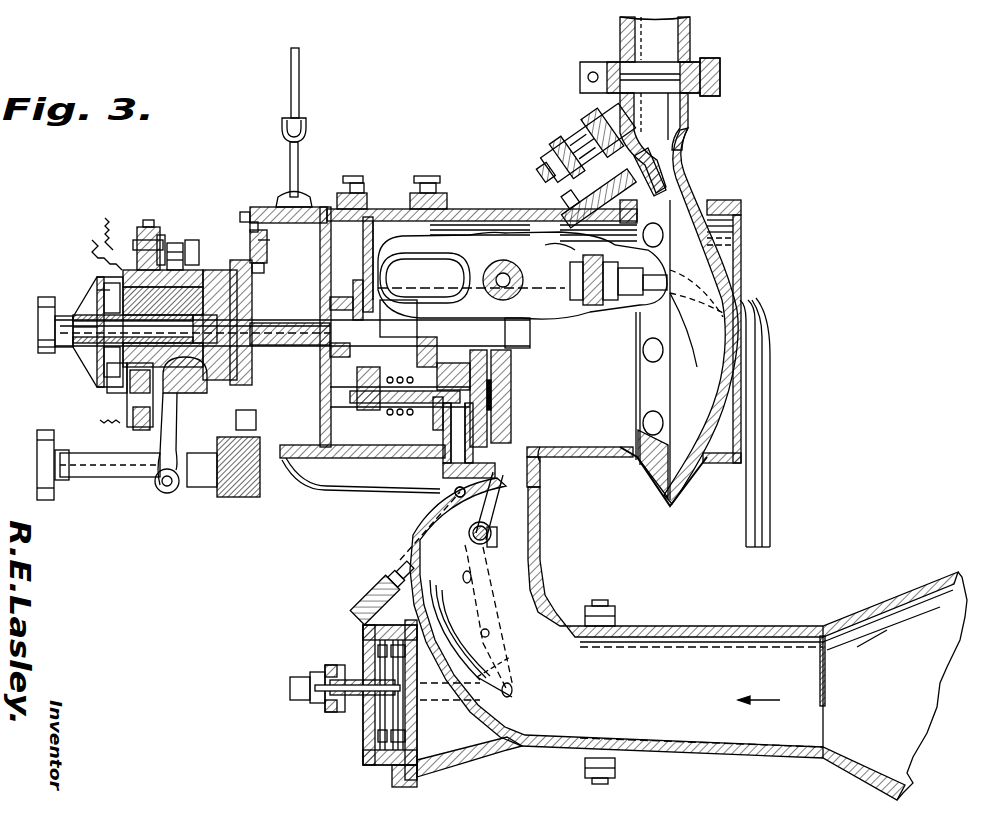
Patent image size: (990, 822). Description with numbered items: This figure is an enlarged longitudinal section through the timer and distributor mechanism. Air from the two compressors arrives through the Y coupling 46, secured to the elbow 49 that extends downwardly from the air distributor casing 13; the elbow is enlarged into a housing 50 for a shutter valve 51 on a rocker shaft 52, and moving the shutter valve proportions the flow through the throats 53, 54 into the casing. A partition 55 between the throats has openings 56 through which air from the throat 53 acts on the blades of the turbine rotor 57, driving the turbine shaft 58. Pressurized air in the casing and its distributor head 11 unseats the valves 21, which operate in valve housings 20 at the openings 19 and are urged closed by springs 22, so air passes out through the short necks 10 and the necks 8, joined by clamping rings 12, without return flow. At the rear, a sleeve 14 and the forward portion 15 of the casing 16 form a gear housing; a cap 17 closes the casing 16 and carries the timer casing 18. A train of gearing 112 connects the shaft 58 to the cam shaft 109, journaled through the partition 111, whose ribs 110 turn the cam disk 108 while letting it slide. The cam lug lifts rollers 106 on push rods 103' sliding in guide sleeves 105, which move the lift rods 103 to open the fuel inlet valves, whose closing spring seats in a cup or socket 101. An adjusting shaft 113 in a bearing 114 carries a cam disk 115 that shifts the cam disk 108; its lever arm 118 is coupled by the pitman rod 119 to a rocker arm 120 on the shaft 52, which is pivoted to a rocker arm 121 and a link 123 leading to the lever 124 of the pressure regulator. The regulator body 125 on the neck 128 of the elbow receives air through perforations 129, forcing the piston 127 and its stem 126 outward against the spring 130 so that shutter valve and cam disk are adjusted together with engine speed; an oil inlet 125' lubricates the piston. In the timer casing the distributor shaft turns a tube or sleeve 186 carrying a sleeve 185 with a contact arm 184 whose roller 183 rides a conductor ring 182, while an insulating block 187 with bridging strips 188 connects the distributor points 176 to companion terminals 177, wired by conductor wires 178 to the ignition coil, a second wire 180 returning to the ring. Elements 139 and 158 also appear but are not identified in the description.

The neck 8 is at (667, 43).
The short neck 10 is at (662, 112).
The air distributor head 11 is at (692, 207).
The clamping ring 12 is at (722, 78).
The cylindrical casing 13 is at (560, 458).
The sleeve 14 is at (386, 207).
The forward portion of casing 15 is at (330, 207).
The casing 16 is at (303, 216).
The cap 17 is at (262, 245).
The timer casing 18 is at (187, 268).
The opening 19 is at (674, 213).
The valve housing 20 is at (575, 184).
The valve 21 is at (641, 166).
The spring 22 is at (573, 135).
The Y coupling 46 is at (738, 626).
The elbow 49 is at (558, 620).
The valve housing 50 is at (410, 521).
The shutter valve 51 is at (506, 500).
The rocker shaft 52 is at (486, 543).
The throat 53 is at (425, 490).
The throat 54 is at (523, 490).
The partition 55 is at (508, 411).
The opening 56 is at (464, 209).
The turbine rotor 57 is at (513, 393).
The turbine shaft 58 is at (447, 327).
The cup or socket 101 is at (254, 232).
The rod or link 103 is at (316, 95).
The push rod 103' is at (321, 169).
The guide sleeve 105 is at (283, 200).
The roller 106 is at (248, 214).
The cam disk 108 is at (320, 382).
The cam shaft 109 is at (335, 290).
The rib 110 is at (250, 240).
The partition 111 is at (369, 185).
The train of gearing 112 is at (335, 397).
The adjusting shaft 113 is at (240, 410).
The bearing 114 is at (240, 394).
The cam disk 115 is at (252, 266).
The lever arm 118 is at (250, 421).
The pitman rod 119 is at (327, 497).
The rocker arm 120 is at (407, 556).
The rocker arm 121 is at (497, 621).
The link 123 is at (505, 660).
The lever 124 is at (310, 680).
The pressure regulator body 125 is at (357, 599).
The oil inlet 125' is at (354, 574).
The stem 126 is at (320, 707).
The piston 127 is at (417, 707).
The neck 128 is at (450, 758).
The perforation 129 is at (492, 697).
The spring 130 is at (370, 757).
The opening 139 is at (563, 237).
The rod 158 is at (771, 512).
The distributor point 176 is at (160, 250).
The companion terminal 177 is at (147, 424).
The conductor wire 178 is at (93, 319).
The second wire 180 is at (96, 247).
The conductor ring 182 is at (130, 372).
The roller 183 is at (100, 303).
The contact arm 184 is at (103, 309).
The sleeve 185 is at (93, 363).
The tube or sleeve 186 is at (38, 358).
The block of insulating material 187 is at (200, 257).
The bridging strip 188 is at (137, 267).